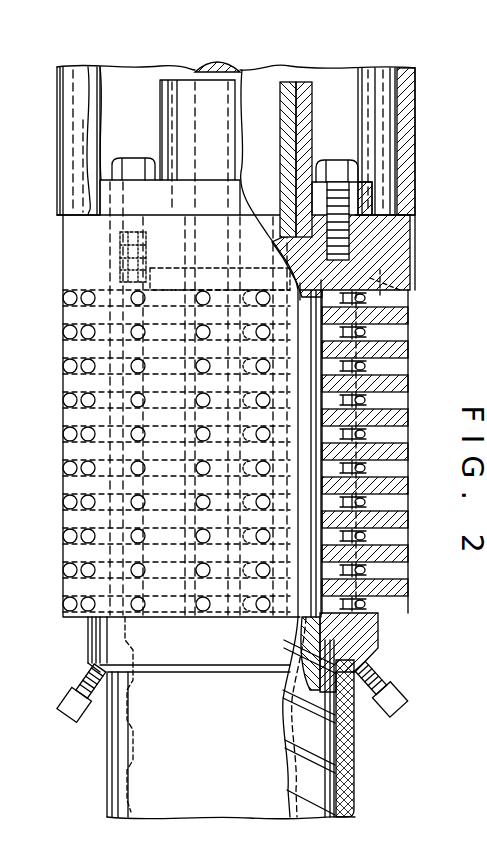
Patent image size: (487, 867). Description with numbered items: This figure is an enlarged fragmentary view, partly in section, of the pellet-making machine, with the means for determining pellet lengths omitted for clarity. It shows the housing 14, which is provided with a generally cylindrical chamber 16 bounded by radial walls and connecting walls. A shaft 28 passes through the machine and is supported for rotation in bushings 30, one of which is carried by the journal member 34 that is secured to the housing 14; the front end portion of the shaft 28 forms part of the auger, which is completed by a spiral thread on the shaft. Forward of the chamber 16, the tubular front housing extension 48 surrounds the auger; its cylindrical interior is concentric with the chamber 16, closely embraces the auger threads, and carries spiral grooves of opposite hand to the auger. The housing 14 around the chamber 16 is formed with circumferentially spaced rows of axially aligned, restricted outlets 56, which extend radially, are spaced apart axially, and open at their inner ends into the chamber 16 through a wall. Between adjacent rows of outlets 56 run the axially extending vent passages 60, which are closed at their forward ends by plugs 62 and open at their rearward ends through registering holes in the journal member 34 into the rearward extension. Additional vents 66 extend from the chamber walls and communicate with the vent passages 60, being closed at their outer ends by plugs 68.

The housing 14 is at (410, 244).
The chamber 16 is at (362, 648).
The shaft 28 is at (177, 339).
The bushings 30 is at (300, 120).
The journal member 34 is at (345, 200).
The front housing extension 48 is at (100, 785).
The restricted outlets 56 is at (138, 600).
The vent passages 60 is at (118, 268).
The plugs 62 is at (60, 712).
The additional vents 66 is at (346, 776).
The plugs 68 is at (350, 800).